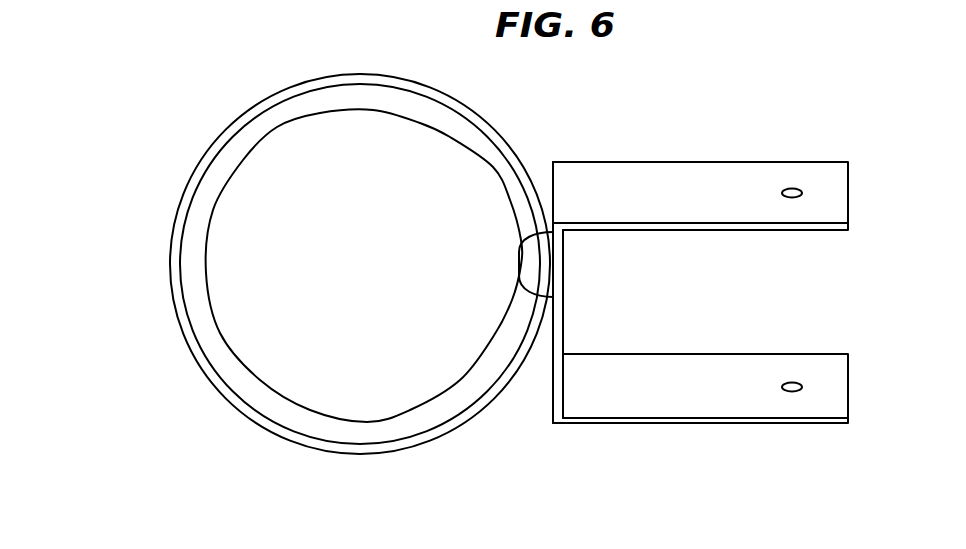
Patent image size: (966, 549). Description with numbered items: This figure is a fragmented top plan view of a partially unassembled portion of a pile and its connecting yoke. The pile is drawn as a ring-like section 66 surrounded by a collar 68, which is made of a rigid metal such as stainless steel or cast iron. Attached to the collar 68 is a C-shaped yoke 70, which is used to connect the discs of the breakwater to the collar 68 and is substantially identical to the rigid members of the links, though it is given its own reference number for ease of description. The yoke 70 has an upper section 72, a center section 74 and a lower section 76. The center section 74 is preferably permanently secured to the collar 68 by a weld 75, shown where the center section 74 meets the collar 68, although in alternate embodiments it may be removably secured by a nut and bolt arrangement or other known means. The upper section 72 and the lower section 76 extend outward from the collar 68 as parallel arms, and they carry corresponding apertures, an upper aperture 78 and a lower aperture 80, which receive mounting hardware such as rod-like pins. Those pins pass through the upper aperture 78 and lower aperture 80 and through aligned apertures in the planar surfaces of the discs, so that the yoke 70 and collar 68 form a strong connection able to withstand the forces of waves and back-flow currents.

The inner liner 66 is at (286, 393).
The collar 68 is at (205, 372).
The U-shaped yoke 70 is at (628, 110).
The upper section 72 is at (830, 194).
The center section 74 is at (555, 313).
The weld 75 is at (521, 279).
The lower section 76 is at (829, 389).
The upper aperture 78 is at (797, 187).
The lower aperture 80 is at (788, 381).